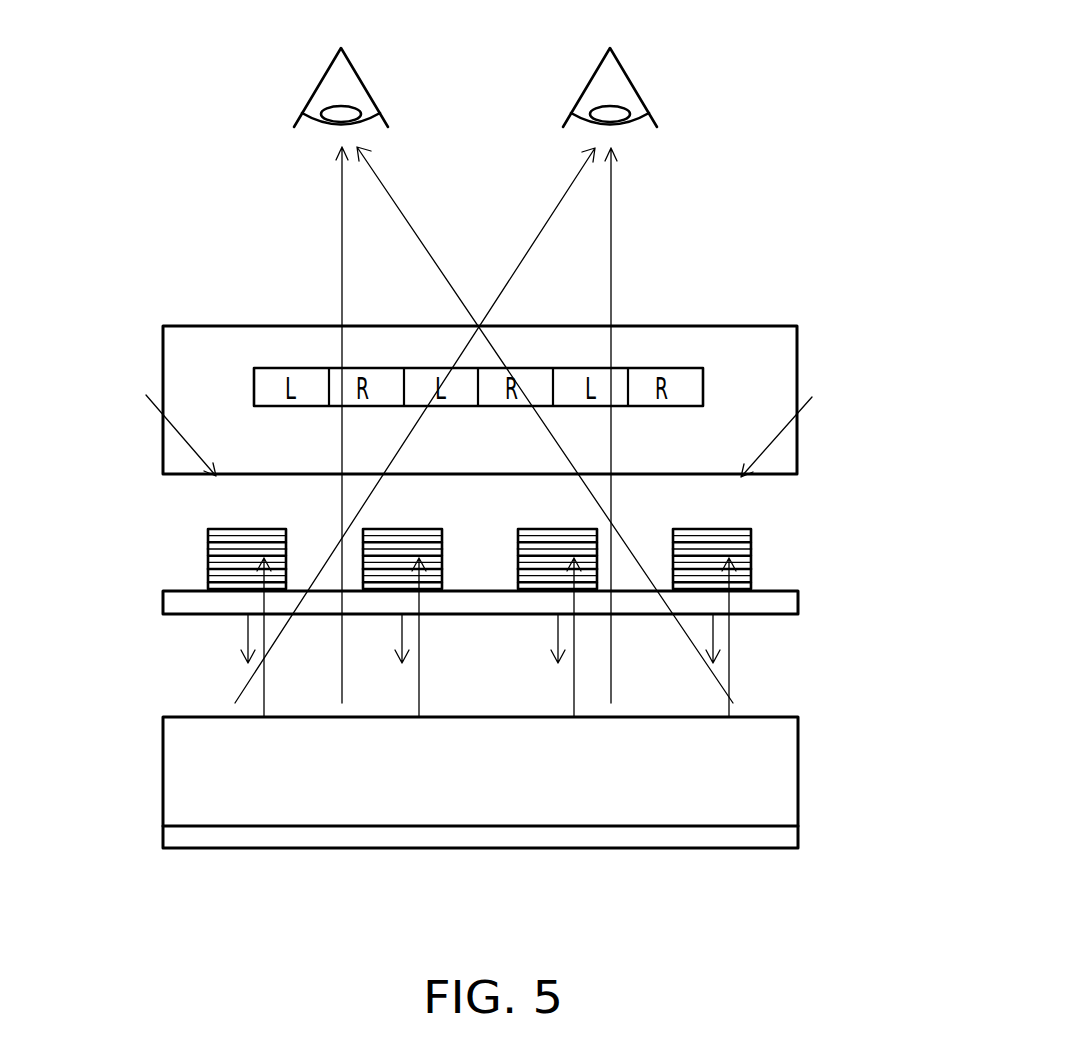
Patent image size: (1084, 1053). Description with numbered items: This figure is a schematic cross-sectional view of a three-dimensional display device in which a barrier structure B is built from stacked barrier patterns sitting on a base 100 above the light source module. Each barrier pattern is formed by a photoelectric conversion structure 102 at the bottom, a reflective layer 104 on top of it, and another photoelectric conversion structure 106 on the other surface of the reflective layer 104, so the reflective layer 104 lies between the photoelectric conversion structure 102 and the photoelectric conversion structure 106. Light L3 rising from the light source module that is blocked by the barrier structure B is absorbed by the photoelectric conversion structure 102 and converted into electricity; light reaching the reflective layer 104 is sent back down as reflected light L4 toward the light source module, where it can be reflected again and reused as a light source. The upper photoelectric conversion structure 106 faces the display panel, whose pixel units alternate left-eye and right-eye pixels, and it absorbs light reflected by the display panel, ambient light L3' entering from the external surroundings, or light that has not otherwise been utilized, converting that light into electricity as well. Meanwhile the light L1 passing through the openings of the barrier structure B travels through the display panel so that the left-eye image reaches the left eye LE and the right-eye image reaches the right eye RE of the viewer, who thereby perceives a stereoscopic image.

The substrate 100 is at (762, 606).
The photoelectric conversion structure 102 is at (753, 579).
The reflective layer 104 is at (745, 560).
The photoelectric conversion structure 106 is at (752, 533).
The barrier structure B is at (903, 515).
The light L1 is at (328, 553).
The light L3 is at (419, 427).
The ambient light L3' is at (440, 428).
The reflected light L4 is at (248, 633).
The right eye RE is at (341, 67).
The left eye LE is at (610, 67).